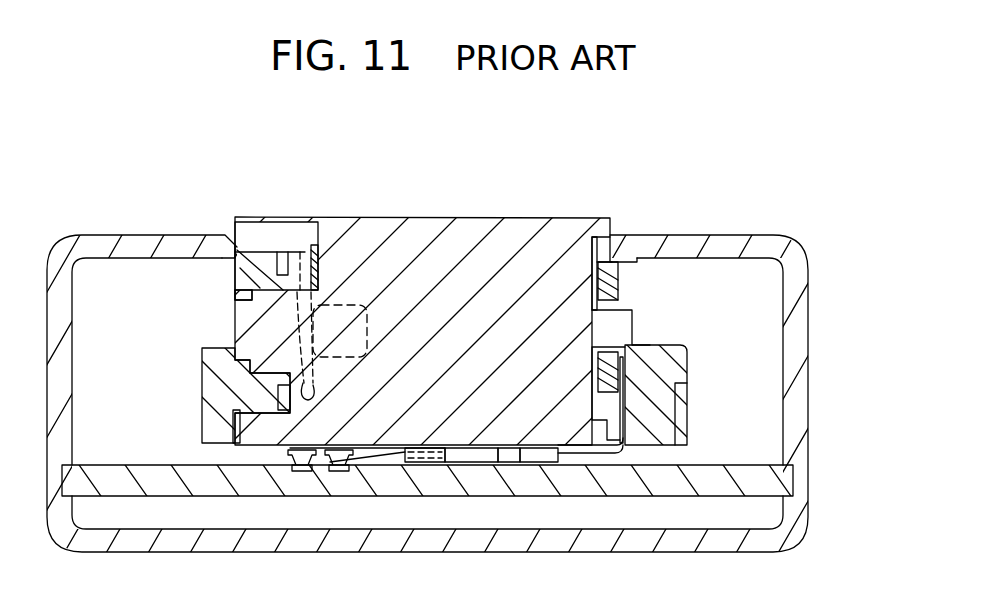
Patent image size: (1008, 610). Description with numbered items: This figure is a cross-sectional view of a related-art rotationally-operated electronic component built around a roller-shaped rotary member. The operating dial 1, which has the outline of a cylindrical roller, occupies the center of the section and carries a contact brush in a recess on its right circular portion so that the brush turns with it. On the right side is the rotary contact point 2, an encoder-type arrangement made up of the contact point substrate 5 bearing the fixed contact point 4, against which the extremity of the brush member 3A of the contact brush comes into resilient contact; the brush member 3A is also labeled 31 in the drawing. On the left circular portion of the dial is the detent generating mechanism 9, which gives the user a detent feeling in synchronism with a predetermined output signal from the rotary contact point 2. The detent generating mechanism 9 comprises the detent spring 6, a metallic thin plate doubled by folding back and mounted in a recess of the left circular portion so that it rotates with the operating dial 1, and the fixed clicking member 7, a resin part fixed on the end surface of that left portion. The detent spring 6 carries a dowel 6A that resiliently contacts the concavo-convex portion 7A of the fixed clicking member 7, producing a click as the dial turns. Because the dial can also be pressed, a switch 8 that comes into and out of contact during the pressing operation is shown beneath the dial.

The operating dial 1 is at (473, 230).
The rotary contact point 2 is at (862, 275).
The brush member 3A is at (713, 345).
The holder frame 31 is at (625, 371).
The fixed contact point 4 is at (625, 387).
The contact point substrate 5 is at (653, 412).
The detent spring 6 is at (292, 258).
The dowel 6A is at (281, 255).
The fixed clicking member 7 is at (250, 265).
The concavo-convex portion 7A is at (280, 272).
The switch 8 is at (402, 458).
The detent generating mechanism 9 is at (320, 147).